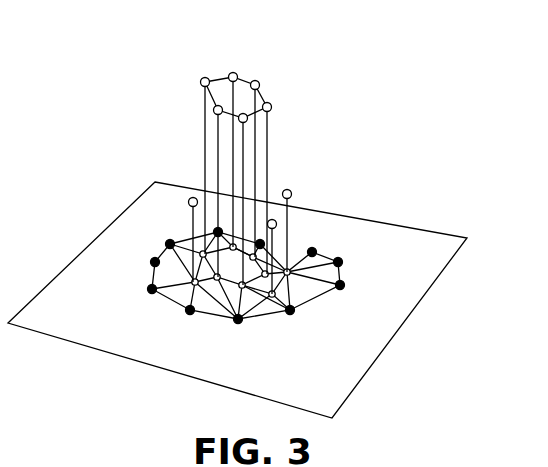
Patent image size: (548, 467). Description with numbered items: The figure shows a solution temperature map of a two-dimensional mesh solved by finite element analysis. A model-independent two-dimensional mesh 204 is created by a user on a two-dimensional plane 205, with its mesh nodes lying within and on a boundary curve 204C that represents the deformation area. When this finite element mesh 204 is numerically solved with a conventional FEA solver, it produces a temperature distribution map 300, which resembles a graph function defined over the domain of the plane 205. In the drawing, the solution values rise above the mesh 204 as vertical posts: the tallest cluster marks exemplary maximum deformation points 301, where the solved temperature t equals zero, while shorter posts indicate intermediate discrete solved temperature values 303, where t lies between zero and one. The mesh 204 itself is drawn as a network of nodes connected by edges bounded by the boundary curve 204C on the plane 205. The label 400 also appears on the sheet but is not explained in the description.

The temperature distribution map 300 is at (178, 132).
The maximum deformation points 301 is at (259, 85).
The intermediate discrete solved temperature values 303 is at (276, 222).
The model-independent 2D mesh 204 is at (158, 307).
The boundary curve 204C is at (344, 290).
The 2D plane 205 is at (420, 303).
The sheet/figure reference 400 is at (458, 456).